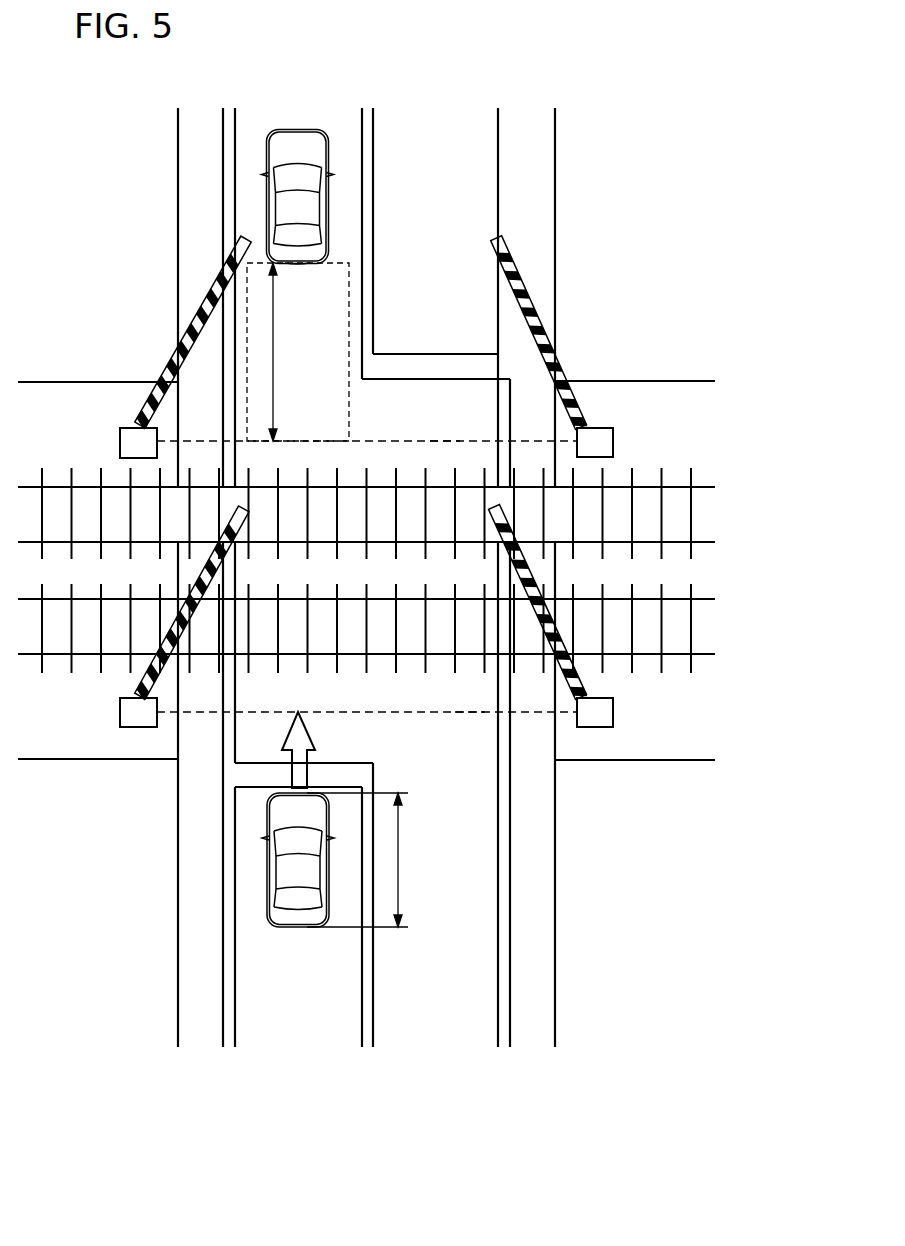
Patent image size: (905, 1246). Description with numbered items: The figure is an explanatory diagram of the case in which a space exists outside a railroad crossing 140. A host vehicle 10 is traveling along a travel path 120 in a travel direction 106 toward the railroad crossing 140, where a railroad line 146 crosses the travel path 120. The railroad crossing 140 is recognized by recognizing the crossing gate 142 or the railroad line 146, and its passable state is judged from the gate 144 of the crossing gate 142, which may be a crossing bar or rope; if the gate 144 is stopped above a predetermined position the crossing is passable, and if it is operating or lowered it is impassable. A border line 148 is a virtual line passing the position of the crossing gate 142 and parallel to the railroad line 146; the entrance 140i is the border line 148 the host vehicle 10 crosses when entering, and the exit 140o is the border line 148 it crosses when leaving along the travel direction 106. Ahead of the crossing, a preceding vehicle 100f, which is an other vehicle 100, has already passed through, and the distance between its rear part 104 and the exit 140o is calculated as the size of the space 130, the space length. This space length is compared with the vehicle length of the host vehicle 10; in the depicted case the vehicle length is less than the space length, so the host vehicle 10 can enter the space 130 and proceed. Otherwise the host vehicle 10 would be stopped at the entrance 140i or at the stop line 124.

The host vehicle 10 is at (297, 927).
The other vehicle 100 is at (328, 166).
The preceding vehicle 100f is at (295, 130).
The rear part 104 is at (294, 264).
The travel direction 106 is at (298, 715).
The travel path 120 is at (298, 1022).
The stop line 124 is at (355, 775).
The space 130 is at (327, 328).
The railroad crossing 140 is at (135, 325).
The exit 140o is at (303, 437).
The entrance 140i is at (333, 722).
The crossing gate 142 is at (120, 441).
The gate 144 is at (212, 283).
The railroad line 146 is at (702, 542).
The border line 148 is at (445, 440).